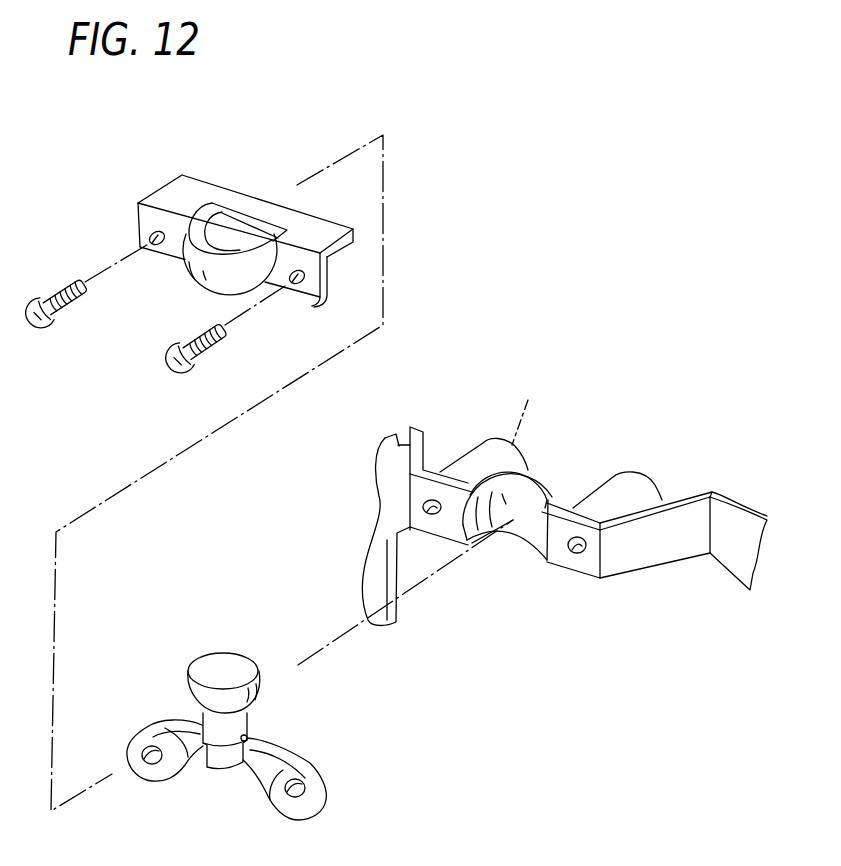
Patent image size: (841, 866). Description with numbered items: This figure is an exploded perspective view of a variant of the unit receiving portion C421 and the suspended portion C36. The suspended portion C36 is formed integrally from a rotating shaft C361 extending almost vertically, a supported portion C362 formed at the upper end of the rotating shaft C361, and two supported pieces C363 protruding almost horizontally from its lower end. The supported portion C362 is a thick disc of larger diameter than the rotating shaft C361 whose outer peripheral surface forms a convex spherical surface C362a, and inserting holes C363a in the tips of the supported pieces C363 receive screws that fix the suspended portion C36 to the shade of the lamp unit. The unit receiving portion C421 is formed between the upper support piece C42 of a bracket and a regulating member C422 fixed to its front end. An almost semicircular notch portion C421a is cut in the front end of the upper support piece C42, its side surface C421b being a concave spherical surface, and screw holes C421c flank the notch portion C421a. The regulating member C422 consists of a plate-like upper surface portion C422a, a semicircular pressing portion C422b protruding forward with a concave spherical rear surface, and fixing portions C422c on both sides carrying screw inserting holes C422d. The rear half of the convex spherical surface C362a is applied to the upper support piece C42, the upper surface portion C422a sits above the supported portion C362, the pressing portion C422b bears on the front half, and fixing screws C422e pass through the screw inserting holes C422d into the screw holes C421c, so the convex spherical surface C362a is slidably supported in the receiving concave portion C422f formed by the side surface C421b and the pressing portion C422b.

The regulating member C422 is at (213, 268).
The upper surface portion C422a is at (268, 208).
The pressing portion C422b is at (195, 278).
The fixing portion C422c is at (305, 309).
The screw inserting hole C422d is at (150, 249).
The fixing screw C422e is at (66, 330).
The receiving concave portion C422f is at (526, 408).
The upper support piece C42 is at (527, 505).
The unit receiving portion C421 is at (519, 523).
The notch portion C421a is at (497, 540).
The side surface C421b is at (527, 512).
The screw hole C421c is at (425, 515).
The suspended portion C36 is at (245, 725).
The rotating shaft C361 is at (244, 726).
The supported portion C362 is at (255, 650).
The convex spherical surface C362a is at (264, 690).
The supported piece C363 is at (245, 791).
The inserting hole C363a is at (322, 790).